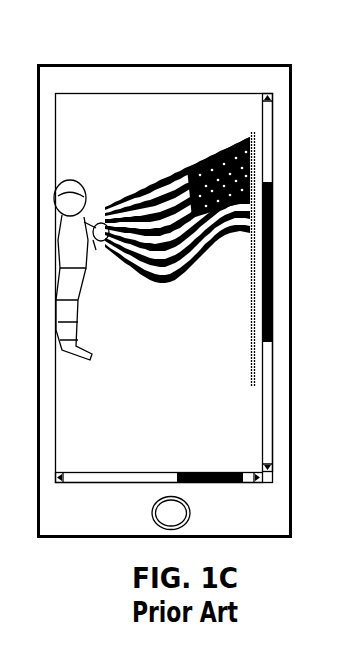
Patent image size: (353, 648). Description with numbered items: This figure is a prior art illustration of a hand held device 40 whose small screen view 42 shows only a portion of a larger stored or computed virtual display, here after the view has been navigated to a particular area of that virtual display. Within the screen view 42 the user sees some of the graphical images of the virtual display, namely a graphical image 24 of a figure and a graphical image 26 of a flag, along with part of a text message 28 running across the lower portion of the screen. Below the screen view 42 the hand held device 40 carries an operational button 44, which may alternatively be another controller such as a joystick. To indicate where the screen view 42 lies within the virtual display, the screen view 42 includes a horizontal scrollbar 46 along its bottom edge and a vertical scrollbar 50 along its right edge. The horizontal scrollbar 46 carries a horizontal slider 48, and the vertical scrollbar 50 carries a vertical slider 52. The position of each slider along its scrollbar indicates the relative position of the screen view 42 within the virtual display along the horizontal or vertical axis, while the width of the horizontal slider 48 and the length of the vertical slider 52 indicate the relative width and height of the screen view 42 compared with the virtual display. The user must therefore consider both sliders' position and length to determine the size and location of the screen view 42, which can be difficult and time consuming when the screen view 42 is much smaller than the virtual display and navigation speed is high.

The hand held device 40 is at (164, 65).
The screen view 42 is at (107, 103).
The graphical image 24 is at (70, 179).
The graphical image 26 is at (222, 148).
The text message 28 is at (118, 432).
The operational button 44 is at (150, 505).
The horizontal scrollbar 46 is at (107, 478).
The horizontal slider 48 is at (218, 483).
The vertical scrollbar 50 is at (267, 401).
The vertical slider 52 is at (274, 252).